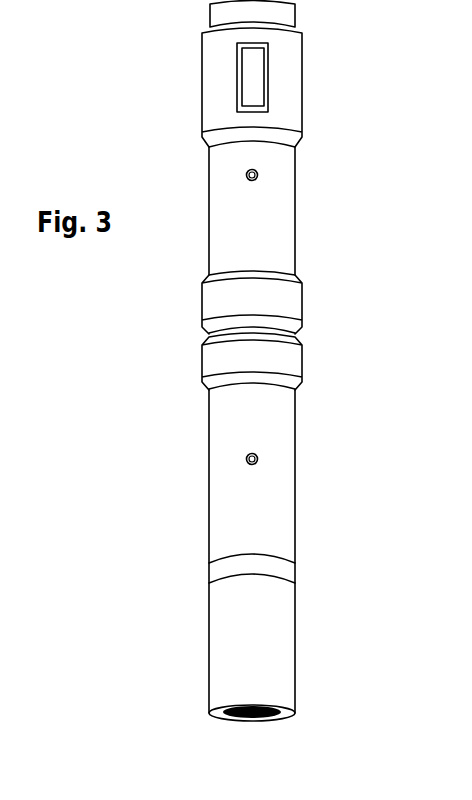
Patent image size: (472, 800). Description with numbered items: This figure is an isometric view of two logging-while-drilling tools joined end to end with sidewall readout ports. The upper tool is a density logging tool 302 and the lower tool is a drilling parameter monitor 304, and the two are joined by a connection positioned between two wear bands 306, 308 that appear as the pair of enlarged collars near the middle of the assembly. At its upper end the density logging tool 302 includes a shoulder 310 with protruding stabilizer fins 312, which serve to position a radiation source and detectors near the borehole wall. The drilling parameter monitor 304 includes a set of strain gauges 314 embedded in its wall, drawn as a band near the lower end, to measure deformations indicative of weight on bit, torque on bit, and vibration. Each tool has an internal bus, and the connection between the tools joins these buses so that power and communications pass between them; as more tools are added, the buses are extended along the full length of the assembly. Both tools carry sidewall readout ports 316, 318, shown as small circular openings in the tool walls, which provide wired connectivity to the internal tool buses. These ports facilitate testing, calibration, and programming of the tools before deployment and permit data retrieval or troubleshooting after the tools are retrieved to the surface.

The density logging tool 302 is at (296, 232).
The drilling parameter monitor 304 is at (297, 408).
The wear band 306 is at (293, 299).
The wear band 308 is at (293, 360).
The shoulder 310 is at (293, 99).
The stabilizer fins 312 is at (267, 53).
The strain gauges 314 is at (292, 573).
The sidewall readout port 316 is at (258, 175).
The sidewall readout port 318 is at (260, 457).